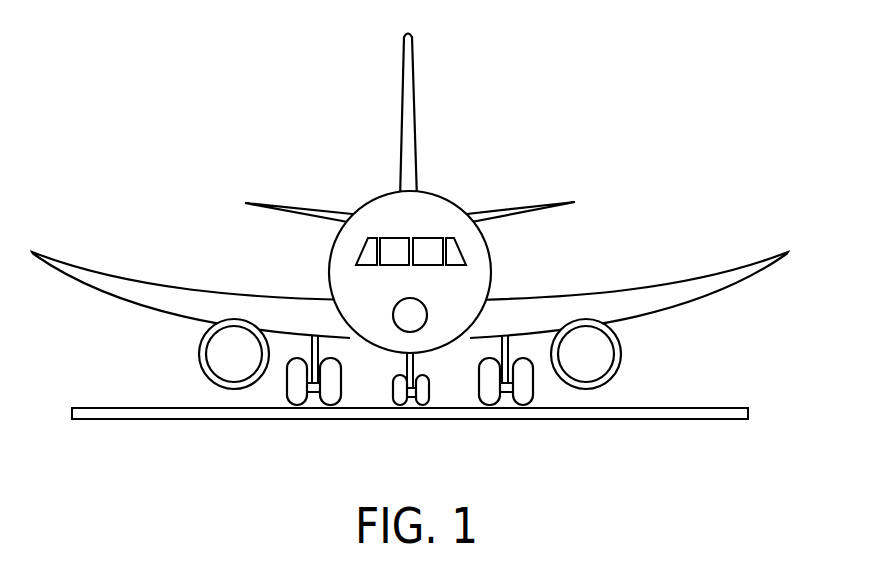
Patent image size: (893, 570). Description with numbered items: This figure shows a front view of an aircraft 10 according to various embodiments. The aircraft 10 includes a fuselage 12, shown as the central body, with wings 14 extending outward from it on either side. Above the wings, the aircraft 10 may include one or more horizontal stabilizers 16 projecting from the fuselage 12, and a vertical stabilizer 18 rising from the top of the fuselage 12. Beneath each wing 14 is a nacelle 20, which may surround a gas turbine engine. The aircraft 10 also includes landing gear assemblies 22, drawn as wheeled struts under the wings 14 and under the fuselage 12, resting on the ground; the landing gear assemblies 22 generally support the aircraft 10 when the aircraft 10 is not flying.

The aircraft 10 is at (262, 110).
The fuselage 12 is at (437, 210).
The wings 14 is at (153, 290).
The horizontal stabilizer 16 is at (316, 211).
The vertical stabilizer 18 is at (411, 102).
The nacelle 20 is at (199, 362).
The landing gear assembly 22 is at (517, 348).